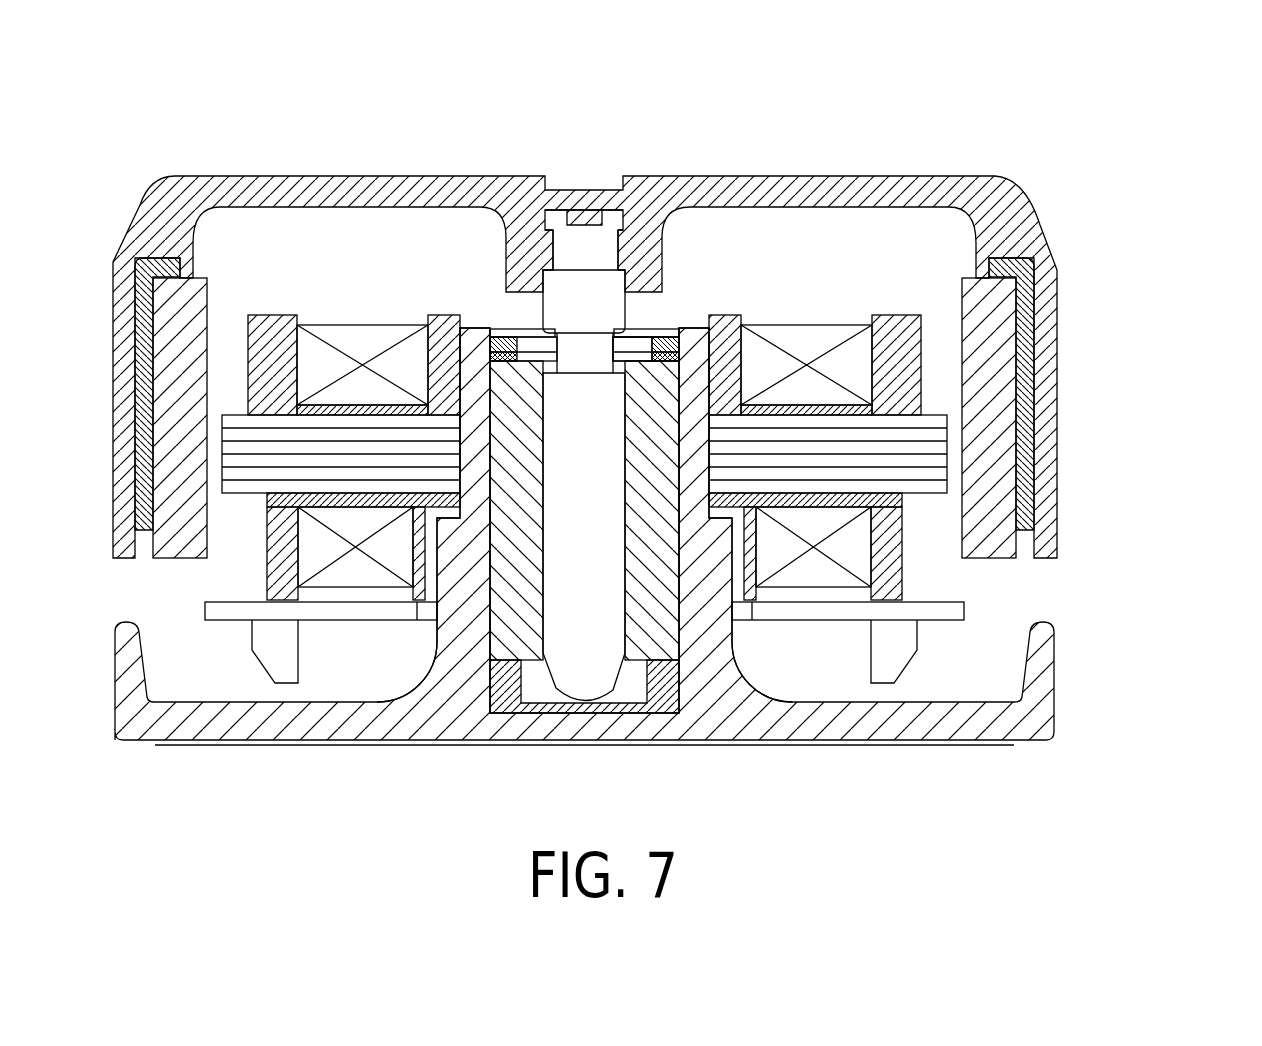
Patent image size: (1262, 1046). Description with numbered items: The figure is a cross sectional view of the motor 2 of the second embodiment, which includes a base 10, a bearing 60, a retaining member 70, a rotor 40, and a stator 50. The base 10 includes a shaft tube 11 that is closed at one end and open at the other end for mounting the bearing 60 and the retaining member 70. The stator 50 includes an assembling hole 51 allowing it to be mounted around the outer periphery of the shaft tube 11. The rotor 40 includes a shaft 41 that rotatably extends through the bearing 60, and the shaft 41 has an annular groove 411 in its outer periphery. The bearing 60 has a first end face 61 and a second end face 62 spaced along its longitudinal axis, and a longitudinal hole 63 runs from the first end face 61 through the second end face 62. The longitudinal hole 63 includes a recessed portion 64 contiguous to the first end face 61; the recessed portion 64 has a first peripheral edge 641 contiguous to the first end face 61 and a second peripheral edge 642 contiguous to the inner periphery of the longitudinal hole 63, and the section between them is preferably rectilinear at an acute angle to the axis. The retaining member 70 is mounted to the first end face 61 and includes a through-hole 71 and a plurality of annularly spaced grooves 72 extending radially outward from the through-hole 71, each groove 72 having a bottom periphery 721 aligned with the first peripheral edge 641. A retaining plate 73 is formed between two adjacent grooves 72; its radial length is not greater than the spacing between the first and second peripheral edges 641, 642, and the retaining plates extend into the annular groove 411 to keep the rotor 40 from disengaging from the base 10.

The motor 2 is at (1105, 203).
The base 10 is at (1048, 666).
The shaft tube 11 is at (735, 395).
The rotor 40 is at (970, 177).
The shaft 41 is at (593, 628).
The annular groove 411 is at (594, 372).
The stator 50 is at (935, 358).
The assembling hole 51 is at (790, 345).
The bearing 60 is at (357, 430).
The first end face 61 is at (520, 430).
The second end face 62 is at (528, 668).
The longitudinal hole 63 is at (445, 365).
The recessed portion 64 is at (657, 340).
The first peripheral edge 641 is at (680, 352).
The second peripheral edge 642 is at (622, 392).
The retaining member 70 is at (706, 328).
The through-hole 71 is at (628, 348).
The grooves 72 is at (565, 360).
The bottom periphery 721 is at (540, 355).
The retaining plate 73 is at (635, 373).